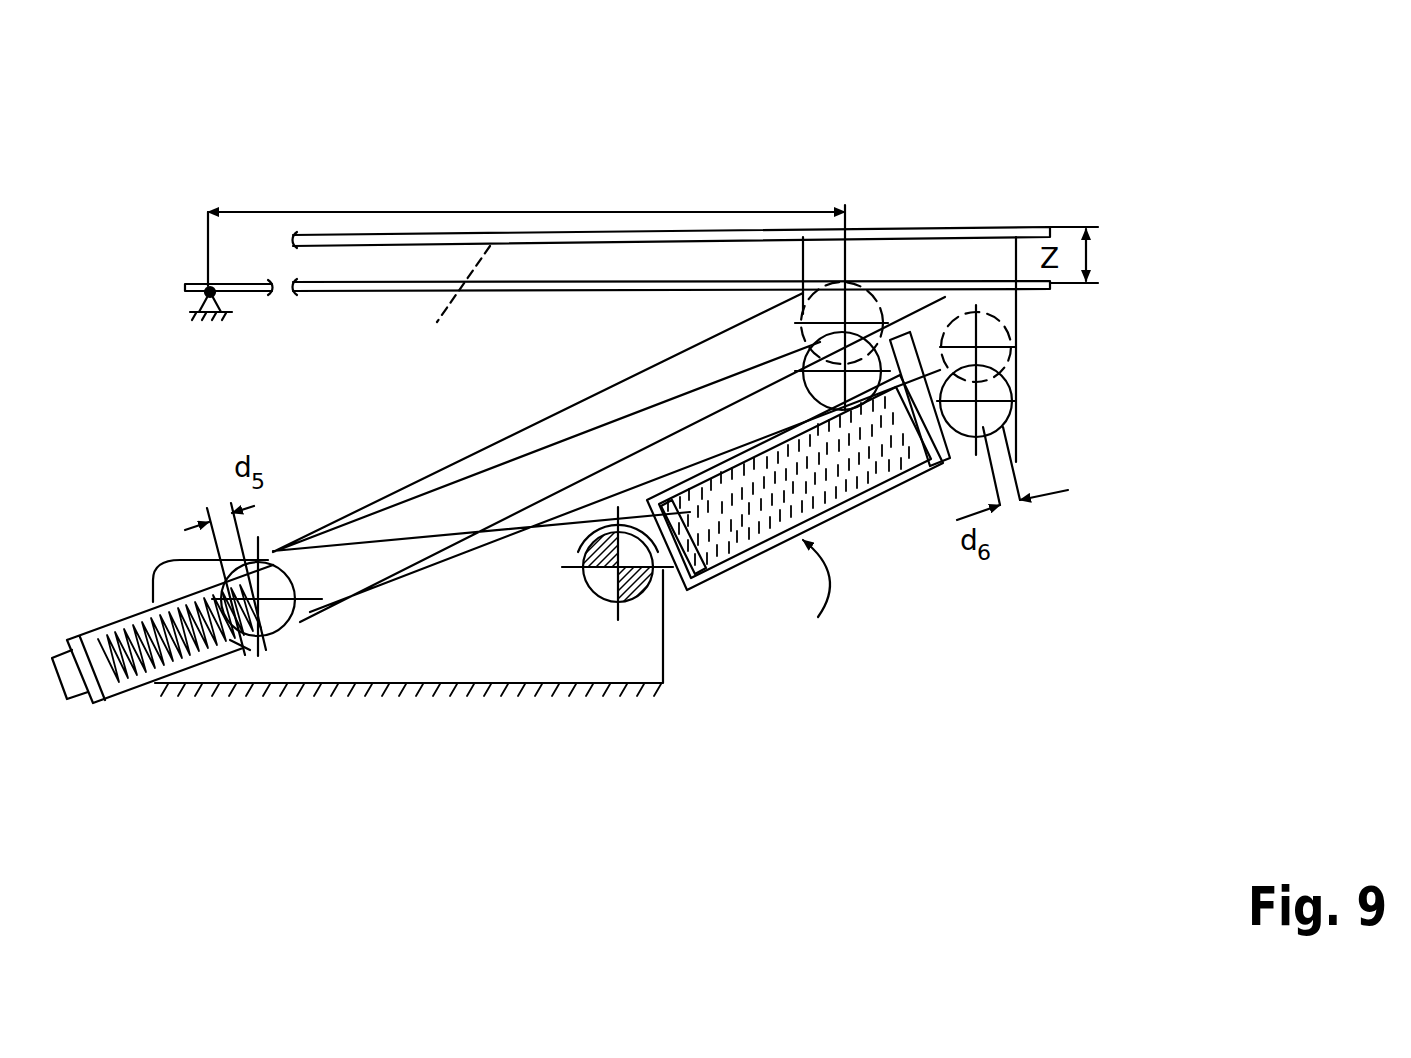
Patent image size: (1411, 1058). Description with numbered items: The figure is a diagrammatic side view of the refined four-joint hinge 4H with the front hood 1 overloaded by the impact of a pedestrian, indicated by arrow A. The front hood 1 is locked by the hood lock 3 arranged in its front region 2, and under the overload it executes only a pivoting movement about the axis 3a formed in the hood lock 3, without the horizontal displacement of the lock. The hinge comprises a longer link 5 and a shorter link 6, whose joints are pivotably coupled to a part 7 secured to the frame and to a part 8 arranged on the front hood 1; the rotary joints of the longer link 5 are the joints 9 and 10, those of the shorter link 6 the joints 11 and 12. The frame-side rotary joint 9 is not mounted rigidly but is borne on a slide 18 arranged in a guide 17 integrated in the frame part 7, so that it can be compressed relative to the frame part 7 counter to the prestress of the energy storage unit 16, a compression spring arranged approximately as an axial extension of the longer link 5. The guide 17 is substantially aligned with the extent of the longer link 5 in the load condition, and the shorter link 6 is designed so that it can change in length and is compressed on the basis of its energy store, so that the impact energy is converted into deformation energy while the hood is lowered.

The front hood 1 is at (400, 292).
The front region 2 is at (243, 283).
The hood lock 3 is at (206, 302).
The axis 3a is at (216, 295).
The longer link 5 is at (460, 478).
The shorter link 6 is at (843, 509).
The frame part 7 is at (633, 653).
The hood part 8 is at (1020, 313).
The rotary joint 9 is at (300, 618).
The rotary joint 10 is at (880, 316).
The rotary joint 11 is at (605, 590).
The rotary joint 12 is at (1005, 392).
The energy storage unit 16 is at (130, 630).
The guide 17 is at (115, 695).
The slide 18 is at (237, 647).
The four-joint hinge in overload position 4H is at (799, 603).
The impact arrow A is at (900, 207).